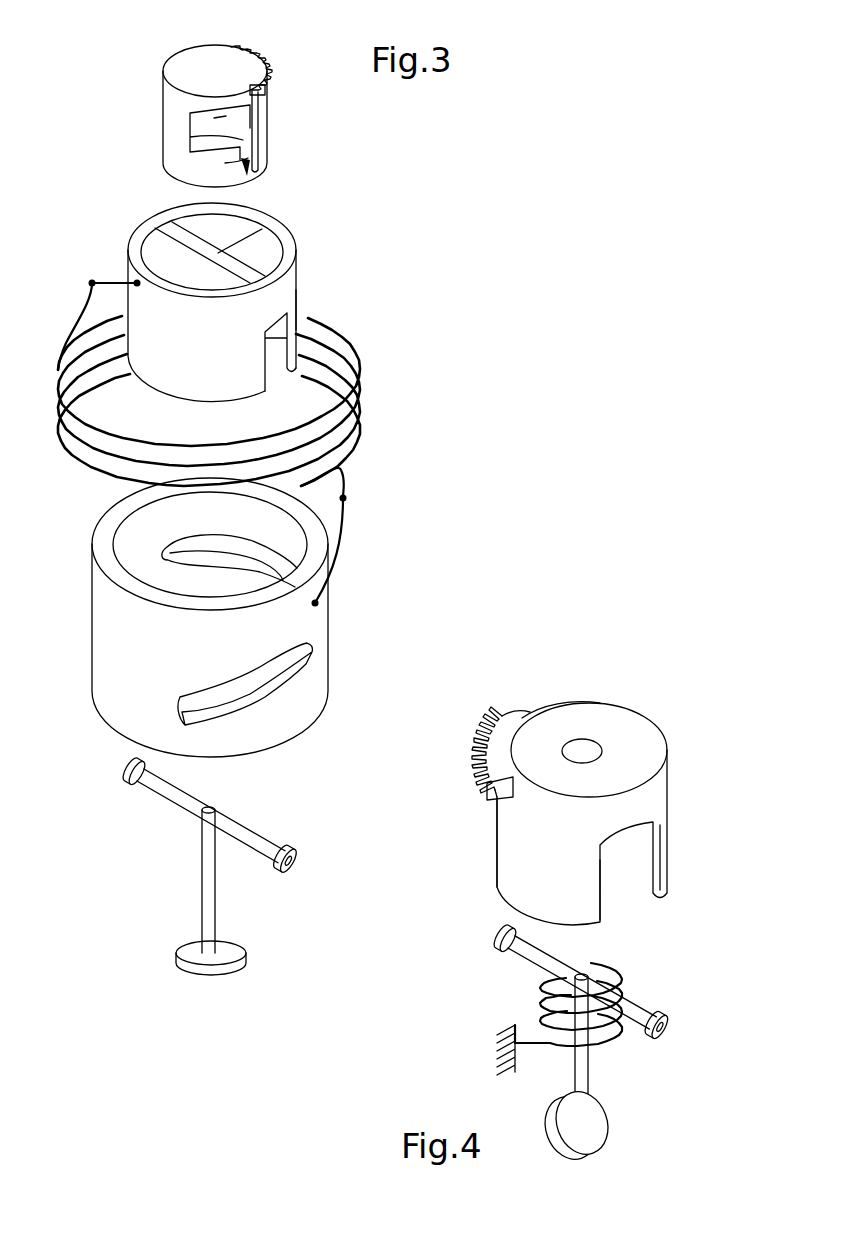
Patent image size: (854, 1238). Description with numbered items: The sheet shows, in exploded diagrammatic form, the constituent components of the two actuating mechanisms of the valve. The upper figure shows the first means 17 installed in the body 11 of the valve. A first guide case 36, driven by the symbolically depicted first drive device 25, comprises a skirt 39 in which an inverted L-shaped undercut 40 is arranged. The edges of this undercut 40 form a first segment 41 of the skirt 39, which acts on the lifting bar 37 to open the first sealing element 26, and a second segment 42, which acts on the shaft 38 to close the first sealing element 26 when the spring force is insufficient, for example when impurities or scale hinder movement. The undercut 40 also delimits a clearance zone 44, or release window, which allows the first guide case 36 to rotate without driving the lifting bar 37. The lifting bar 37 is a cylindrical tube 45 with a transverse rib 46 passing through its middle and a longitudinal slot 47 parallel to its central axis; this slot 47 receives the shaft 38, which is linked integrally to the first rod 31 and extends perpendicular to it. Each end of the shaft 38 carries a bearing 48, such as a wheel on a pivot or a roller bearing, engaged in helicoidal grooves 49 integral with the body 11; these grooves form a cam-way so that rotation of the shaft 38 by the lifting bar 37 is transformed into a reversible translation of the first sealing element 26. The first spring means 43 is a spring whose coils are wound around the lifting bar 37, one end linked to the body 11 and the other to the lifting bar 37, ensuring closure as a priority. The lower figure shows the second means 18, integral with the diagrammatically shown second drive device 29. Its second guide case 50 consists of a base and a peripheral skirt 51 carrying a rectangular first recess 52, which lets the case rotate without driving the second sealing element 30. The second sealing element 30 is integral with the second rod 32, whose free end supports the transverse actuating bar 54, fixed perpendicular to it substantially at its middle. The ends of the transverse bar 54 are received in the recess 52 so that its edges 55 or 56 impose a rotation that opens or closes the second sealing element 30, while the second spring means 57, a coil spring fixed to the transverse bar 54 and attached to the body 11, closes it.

In FIG. 3, the first means 17 is at (60, 146).
In FIG. 3, the first guide case 36 is at (162, 92).
In FIG. 3, the first drive device 25 is at (263, 58).
In FIG. 3, the clearance zone 44 is at (220, 125).
In FIG. 3, the skirt 39 is at (173, 127).
In FIG. 3, the first segment 41 is at (254, 132).
In FIG. 3, the second segment 42 is at (240, 160).
In FIG. 3, the undercut 40 is at (243, 167).
In FIG. 3, the first spring means 43 is at (60, 450).
In FIG. 3, the lifting bar 37 is at (303, 267).
In FIG. 3, the transverse rib 46 is at (275, 210).
In FIG. 3, the cylindrical tube 45 is at (283, 288).
In FIG. 3, the slot 47 is at (266, 338).
In FIG. 3, the body 11 is at (318, 695).
In FIG. 4, the body 11 is at (513, 1058).
In FIG. 3, the helicoidal grooves 49 is at (180, 558).
In FIG. 3, the shaft 38 is at (245, 836).
In FIG. 3, the bearing 48 is at (125, 773).
In FIG. 3, the first rod 31 is at (208, 897).
In FIG. 3, the first sealing element 26 is at (188, 947).
In FIG. 4, the second means 18 is at (658, 726).
In FIG. 4, the second drive device 29 is at (522, 718).
In FIG. 4, the second guide case 50 is at (558, 704).
In FIG. 4, the peripheral skirt 51 is at (518, 838).
In FIG. 4, the edge 55 is at (602, 862).
In FIG. 4, the edge 56 is at (657, 870).
In FIG. 4, the first recess 52 is at (632, 893).
In FIG. 4, the transverse actuating bar 54 is at (552, 936).
In FIG. 4, the second spring means 57 is at (537, 995).
In FIG. 4, the second rod 32 is at (586, 1073).
In FIG. 4, the second sealing element 30 is at (560, 1122).